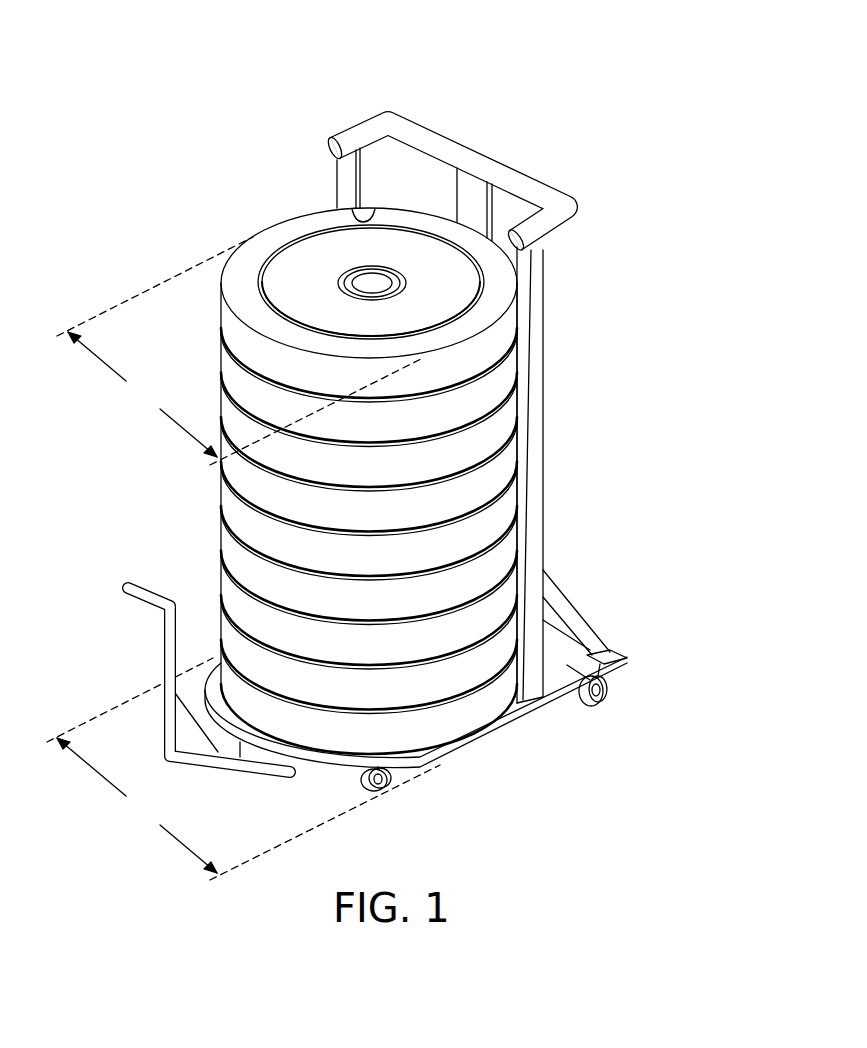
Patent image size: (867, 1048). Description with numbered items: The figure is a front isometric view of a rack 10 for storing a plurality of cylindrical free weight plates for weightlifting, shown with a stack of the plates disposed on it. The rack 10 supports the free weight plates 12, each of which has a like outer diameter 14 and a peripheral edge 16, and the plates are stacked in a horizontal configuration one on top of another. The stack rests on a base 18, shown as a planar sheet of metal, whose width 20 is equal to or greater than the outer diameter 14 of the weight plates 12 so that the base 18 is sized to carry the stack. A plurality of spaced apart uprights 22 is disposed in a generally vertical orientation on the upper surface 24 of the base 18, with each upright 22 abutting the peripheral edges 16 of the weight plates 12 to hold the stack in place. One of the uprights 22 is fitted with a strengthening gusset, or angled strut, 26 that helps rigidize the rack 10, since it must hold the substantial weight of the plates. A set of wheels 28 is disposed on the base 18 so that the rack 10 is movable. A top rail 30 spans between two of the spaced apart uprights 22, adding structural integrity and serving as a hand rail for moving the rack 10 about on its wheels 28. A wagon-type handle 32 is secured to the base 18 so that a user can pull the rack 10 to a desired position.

The rack 10 is at (566, 42).
The free weight plates 12 is at (502, 342).
The outer diameter 14 is at (240, 351).
The peripheral edge 16 is at (377, 206).
The base 18 is at (533, 708).
The width 20 is at (243, 769).
The uprights 22 is at (346, 178).
The upper surface 24 is at (600, 690).
The strengthening gussets 26 is at (560, 602).
The wheels 28 is at (594, 708).
The top rail 30 is at (567, 213).
The handle 32 is at (153, 600).